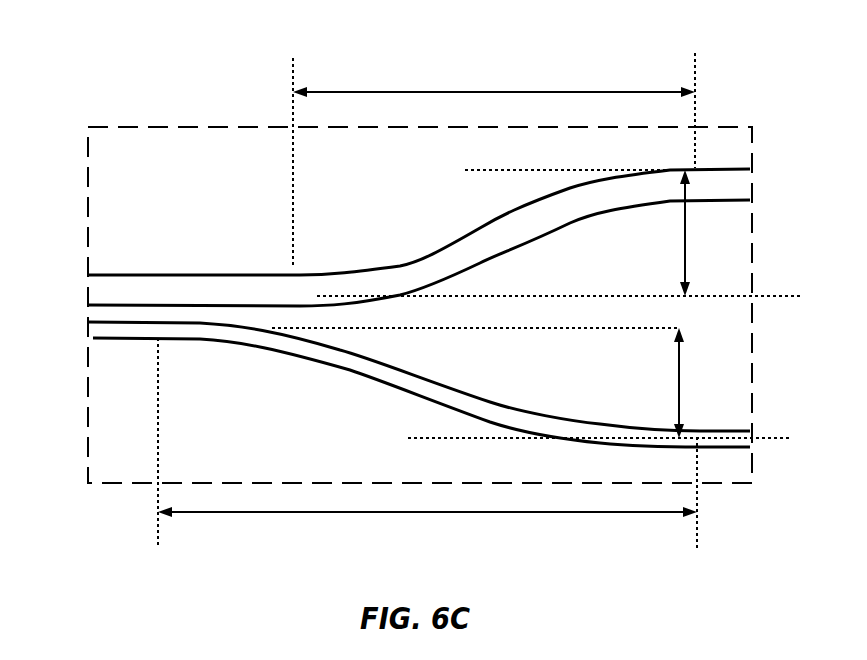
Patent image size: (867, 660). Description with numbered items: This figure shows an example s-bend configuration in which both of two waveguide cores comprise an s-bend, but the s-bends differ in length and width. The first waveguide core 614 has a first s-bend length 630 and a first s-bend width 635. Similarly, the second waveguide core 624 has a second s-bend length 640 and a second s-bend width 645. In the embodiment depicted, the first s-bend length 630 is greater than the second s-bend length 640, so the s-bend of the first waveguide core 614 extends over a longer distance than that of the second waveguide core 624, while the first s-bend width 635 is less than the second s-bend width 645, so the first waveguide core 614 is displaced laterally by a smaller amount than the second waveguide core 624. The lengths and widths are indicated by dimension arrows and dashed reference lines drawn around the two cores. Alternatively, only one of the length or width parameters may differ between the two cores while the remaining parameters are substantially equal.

The first waveguide core 614 is at (120, 339).
The second waveguide core 624 is at (117, 274).
The s-length 1 630 is at (290, 512).
The s-length 2 640 is at (574, 91).
The s-width 1 635 is at (680, 390).
The s-width 2 645 is at (687, 252).